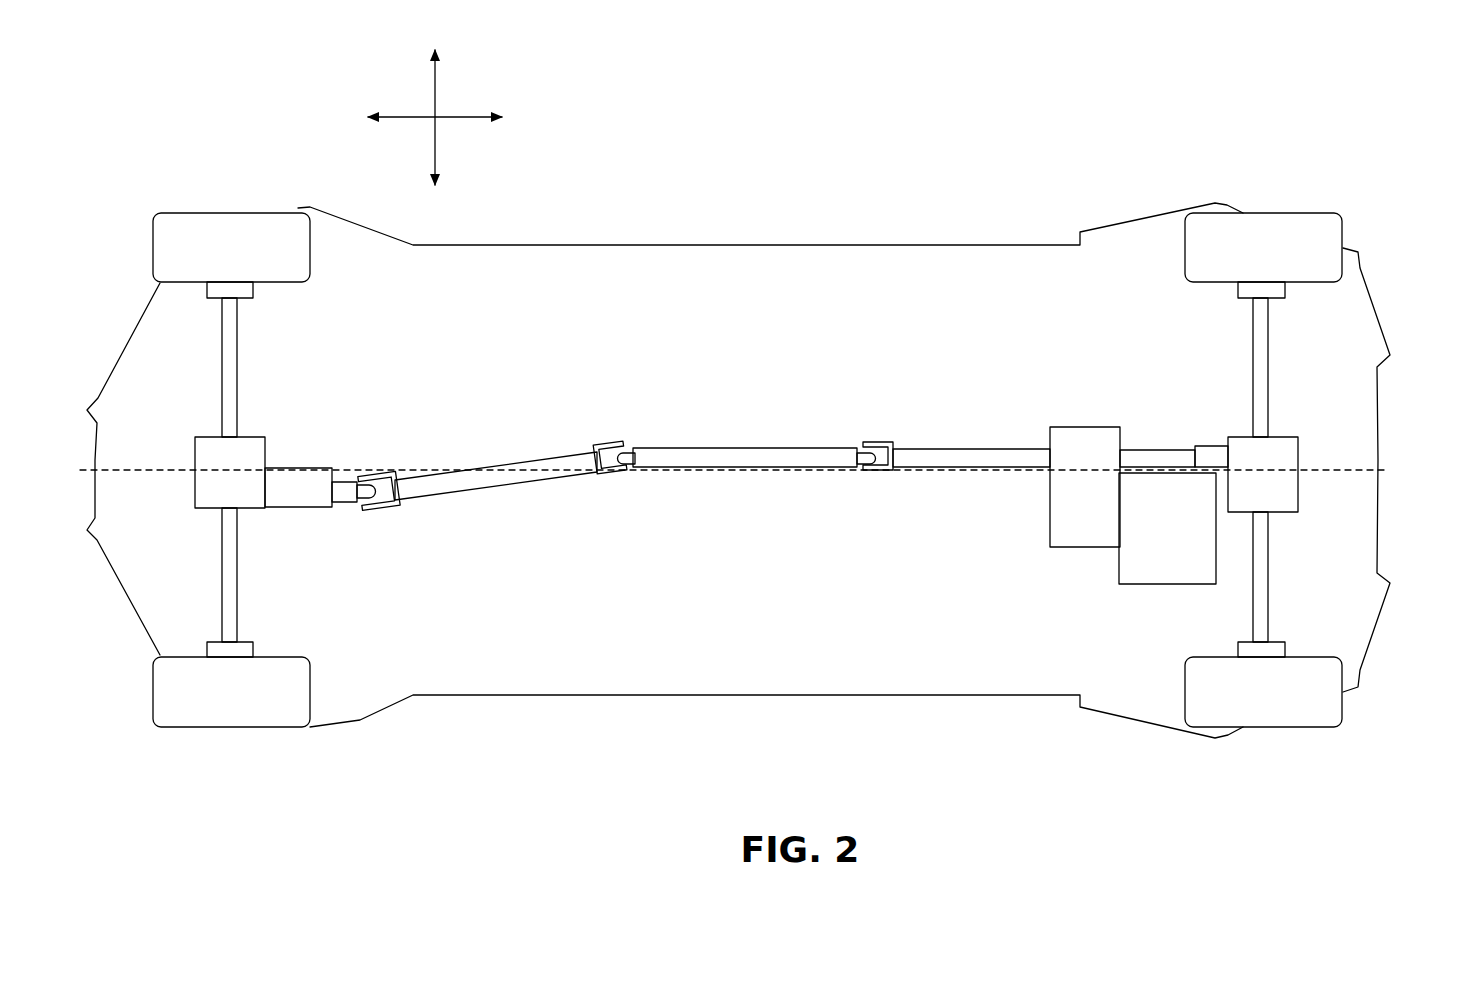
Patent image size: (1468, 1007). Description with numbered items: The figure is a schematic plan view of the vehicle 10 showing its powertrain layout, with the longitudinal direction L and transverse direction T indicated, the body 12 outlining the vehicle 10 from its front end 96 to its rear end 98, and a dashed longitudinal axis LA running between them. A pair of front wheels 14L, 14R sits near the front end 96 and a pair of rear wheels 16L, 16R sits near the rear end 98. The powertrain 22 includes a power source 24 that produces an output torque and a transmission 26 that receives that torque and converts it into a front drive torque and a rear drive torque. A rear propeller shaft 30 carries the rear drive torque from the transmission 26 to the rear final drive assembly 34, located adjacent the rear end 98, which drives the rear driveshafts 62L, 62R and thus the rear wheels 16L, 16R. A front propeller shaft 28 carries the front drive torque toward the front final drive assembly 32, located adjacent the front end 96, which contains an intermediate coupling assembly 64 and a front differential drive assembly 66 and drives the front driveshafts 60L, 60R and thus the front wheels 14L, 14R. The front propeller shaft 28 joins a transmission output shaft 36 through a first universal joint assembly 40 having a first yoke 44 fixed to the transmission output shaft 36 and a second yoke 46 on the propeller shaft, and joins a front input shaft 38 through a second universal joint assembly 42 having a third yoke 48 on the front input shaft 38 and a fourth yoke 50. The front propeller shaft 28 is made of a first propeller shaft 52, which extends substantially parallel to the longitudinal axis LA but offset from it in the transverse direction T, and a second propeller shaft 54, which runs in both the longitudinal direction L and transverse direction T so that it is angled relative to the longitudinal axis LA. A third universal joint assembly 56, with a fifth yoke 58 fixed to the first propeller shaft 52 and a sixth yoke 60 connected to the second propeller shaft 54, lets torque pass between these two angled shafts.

The vehicle 10 is at (938, 183).
The body 12 is at (643, 245).
The front wheel 14R is at (223, 212).
The front wheel 14L is at (243, 727).
The rear wheel 16R is at (1262, 213).
The rear wheel 16L is at (1263, 727).
The powertrain 22 is at (192, 487).
The power source 24 is at (1155, 584).
The transmission 26 is at (1080, 547).
The front propeller shaft 28 is at (745, 418).
The rear propeller shaft 30 is at (1148, 450).
The front final drive assembly 32 is at (290, 458).
The rear final drive assembly 34 is at (1288, 430).
The transmission output shaft 36 is at (962, 450).
The front input shaft 38 is at (398, 503).
The first universal joint assembly 40 is at (846, 463).
The second universal joint assembly 42 is at (368, 506).
The first yoke 44 is at (882, 443).
The second yoke 46 is at (845, 460).
The third yoke 48 is at (387, 497).
The fourth yoke 50 is at (380, 505).
The first propeller shaft 52 is at (680, 448).
The second propeller shaft 54 is at (487, 488).
The third universal joint assembly 56 is at (646, 465).
The fifth yoke 58 is at (640, 465).
The sixth yoke 60 is at (607, 440).
The front driveshaft 60R is at (240, 345).
The front driveshaft 60L is at (222, 607).
The rear driveshaft 62R is at (1253, 360).
The rear driveshaft 62L is at (1268, 600).
The intermediate coupling assembly 64 is at (290, 508).
The front differential drive assembly 66 is at (245, 510).
The front end 96 is at (134, 607).
The rear end 98 is at (1379, 400).
The longitudinal axis LA is at (133, 469).
The longitudinal direction L is at (460, 117).
The transverse direction T is at (437, 147).